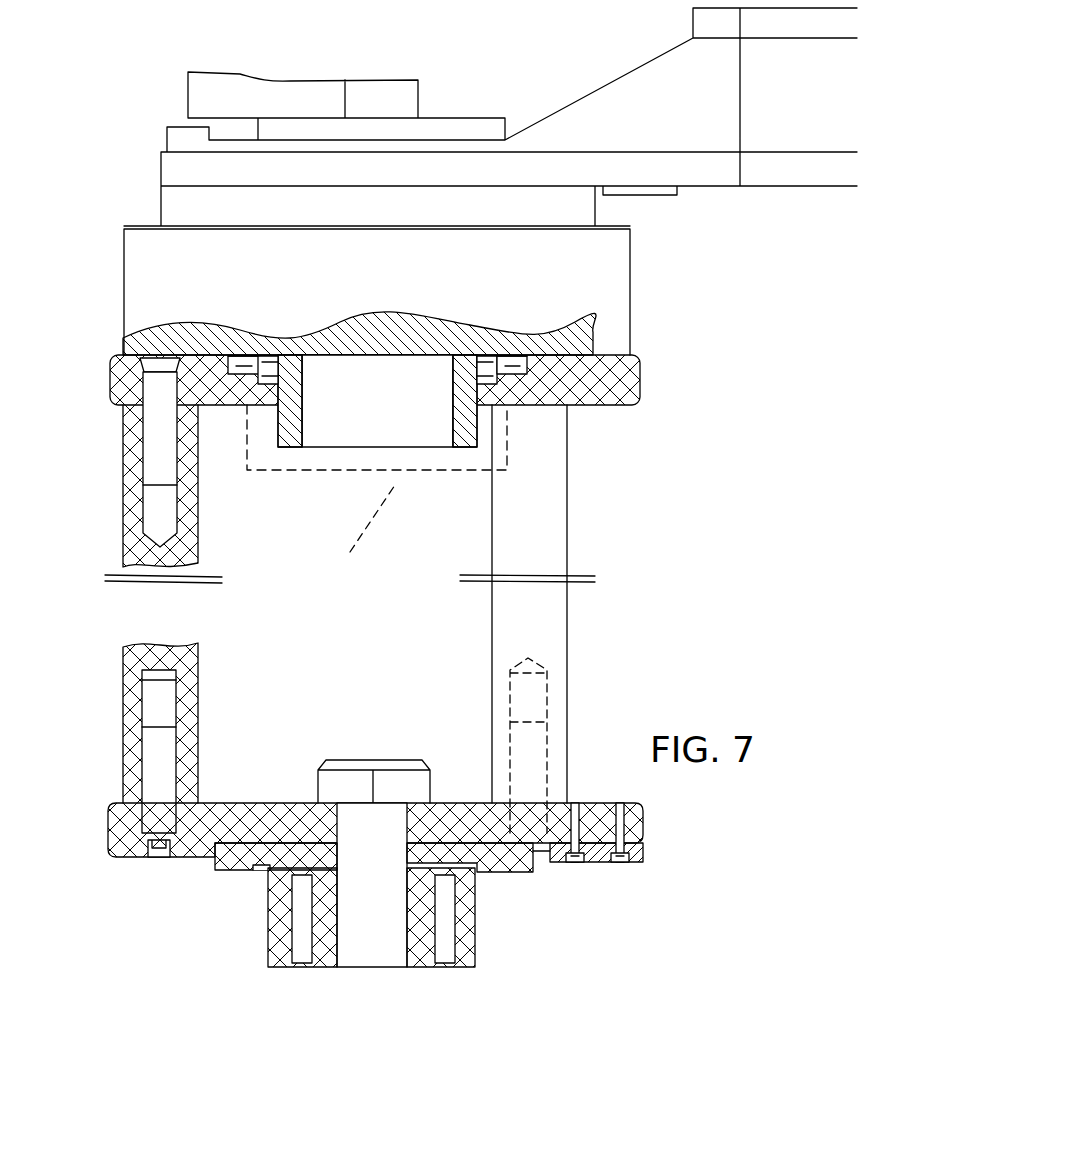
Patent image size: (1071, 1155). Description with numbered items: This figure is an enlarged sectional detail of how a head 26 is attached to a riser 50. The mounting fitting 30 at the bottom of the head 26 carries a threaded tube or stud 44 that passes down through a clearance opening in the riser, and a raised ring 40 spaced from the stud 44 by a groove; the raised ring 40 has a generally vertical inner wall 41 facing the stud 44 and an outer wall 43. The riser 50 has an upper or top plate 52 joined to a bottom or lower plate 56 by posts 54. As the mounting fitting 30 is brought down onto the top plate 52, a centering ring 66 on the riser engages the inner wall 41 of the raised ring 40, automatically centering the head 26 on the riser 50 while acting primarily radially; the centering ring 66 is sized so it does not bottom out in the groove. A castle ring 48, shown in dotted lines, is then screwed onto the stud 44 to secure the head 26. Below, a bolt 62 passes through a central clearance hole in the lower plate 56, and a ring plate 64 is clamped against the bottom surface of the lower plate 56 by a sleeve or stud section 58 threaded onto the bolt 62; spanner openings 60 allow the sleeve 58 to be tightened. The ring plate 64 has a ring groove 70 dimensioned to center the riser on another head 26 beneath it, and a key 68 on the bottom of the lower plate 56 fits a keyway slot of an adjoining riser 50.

The head 26 is at (563, 98).
The mounting fitting 30 is at (122, 283).
The raised ring 40 is at (518, 320).
The inner wall 41 is at (282, 355).
The outer wall 43 is at (228, 356).
The threaded tube or stud 44 is at (296, 447).
The castle ring 48 is at (355, 550).
The riser 50 is at (600, 535).
The upper or top plate 52 is at (607, 393).
The posts 54 is at (548, 625).
The bottom or lower plate 56 is at (257, 810).
The sleeve or stud section 58 is at (463, 945).
The spanner openings 60 is at (440, 958).
The bolt 62 is at (373, 940).
The ring plate 64 is at (513, 868).
The centering ring 66 is at (500, 362).
The key 68 is at (607, 867).
The ring groove 70 is at (258, 870).